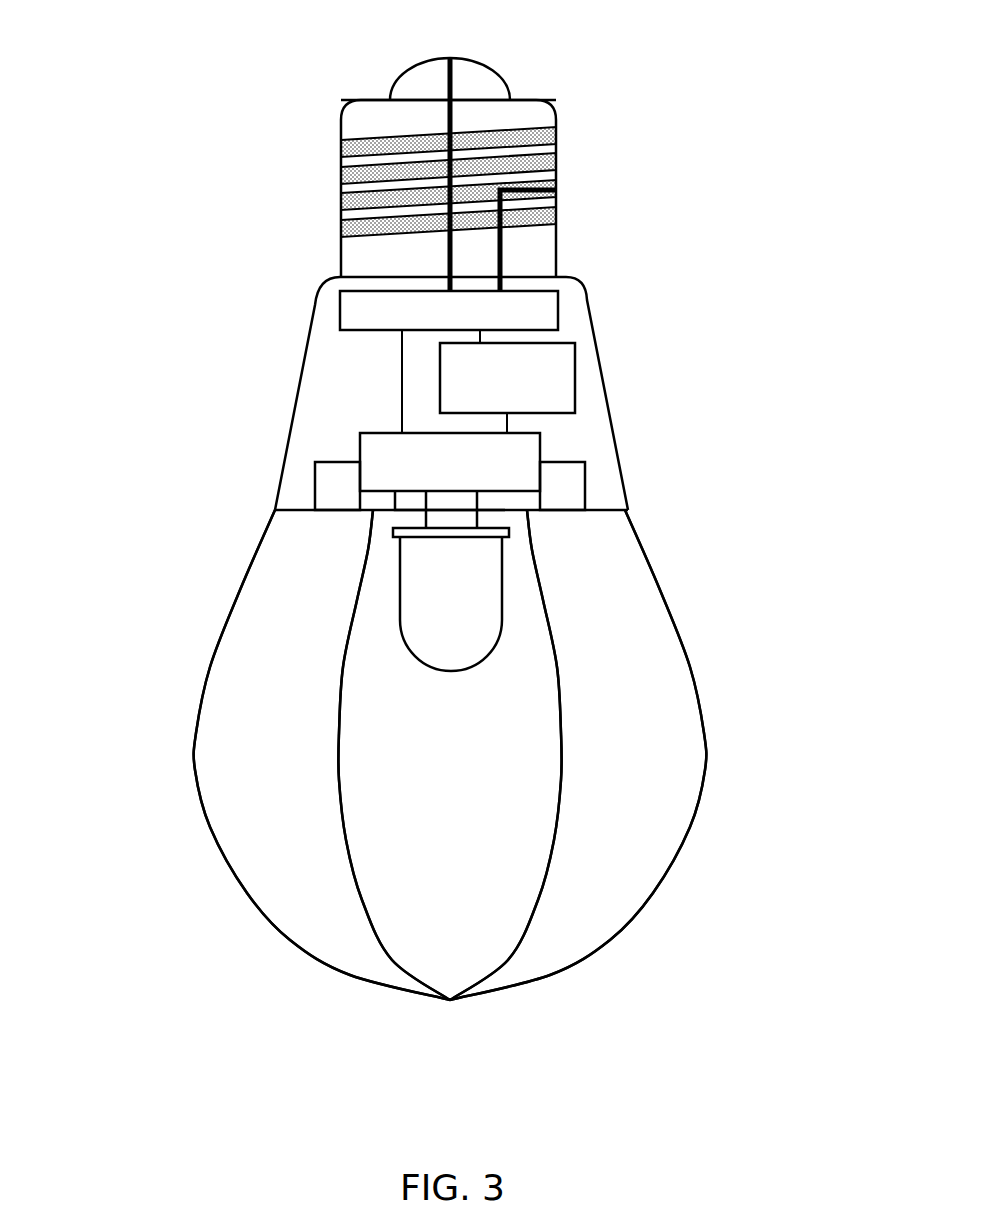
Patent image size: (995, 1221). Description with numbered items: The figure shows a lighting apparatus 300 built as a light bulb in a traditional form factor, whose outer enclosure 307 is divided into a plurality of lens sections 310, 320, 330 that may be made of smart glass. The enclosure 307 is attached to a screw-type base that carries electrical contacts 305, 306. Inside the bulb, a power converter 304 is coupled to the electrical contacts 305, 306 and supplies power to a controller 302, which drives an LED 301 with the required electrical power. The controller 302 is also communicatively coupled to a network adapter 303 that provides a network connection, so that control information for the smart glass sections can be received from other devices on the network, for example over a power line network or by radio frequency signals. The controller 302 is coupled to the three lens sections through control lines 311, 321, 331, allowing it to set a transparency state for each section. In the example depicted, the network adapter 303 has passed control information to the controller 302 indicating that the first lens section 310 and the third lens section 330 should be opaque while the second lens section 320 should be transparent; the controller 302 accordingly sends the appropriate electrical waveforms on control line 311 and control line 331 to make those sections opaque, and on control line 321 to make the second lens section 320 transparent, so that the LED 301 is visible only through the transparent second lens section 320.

The lighting apparatus 300 is at (410, 305).
The LED 301 is at (500, 590).
The controller 302 is at (370, 433).
The network adapter 303 is at (575, 372).
The power converter 304 is at (558, 307).
The electrical contact 305 is at (447, 57).
The electrical contact 306 is at (557, 190).
The outer enclosure 307 is at (240, 590).
The first lens section 310 is at (307, 867).
The control line 311 is at (328, 460).
The second lens section 320 is at (455, 905).
The control line 321 is at (395, 505).
The third lens section 330 is at (610, 823).
The control line 331 is at (587, 495).